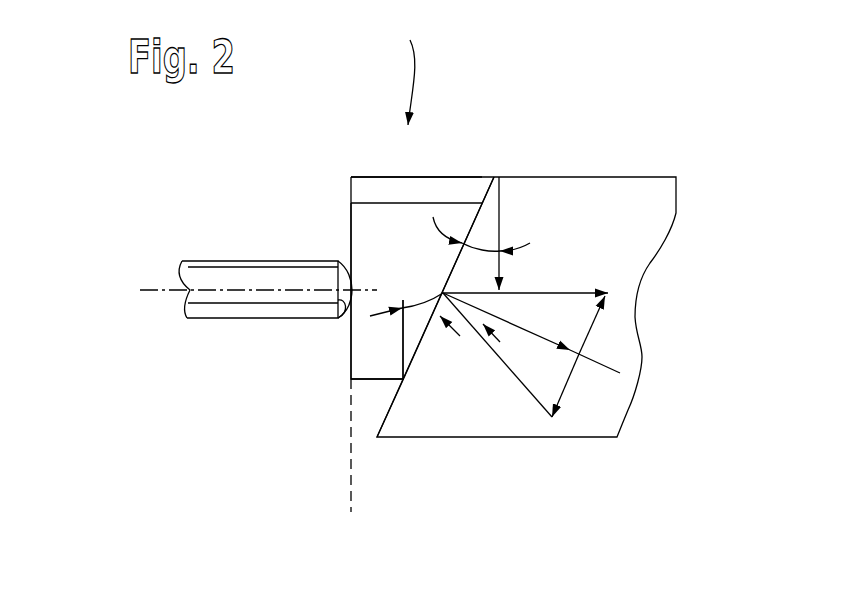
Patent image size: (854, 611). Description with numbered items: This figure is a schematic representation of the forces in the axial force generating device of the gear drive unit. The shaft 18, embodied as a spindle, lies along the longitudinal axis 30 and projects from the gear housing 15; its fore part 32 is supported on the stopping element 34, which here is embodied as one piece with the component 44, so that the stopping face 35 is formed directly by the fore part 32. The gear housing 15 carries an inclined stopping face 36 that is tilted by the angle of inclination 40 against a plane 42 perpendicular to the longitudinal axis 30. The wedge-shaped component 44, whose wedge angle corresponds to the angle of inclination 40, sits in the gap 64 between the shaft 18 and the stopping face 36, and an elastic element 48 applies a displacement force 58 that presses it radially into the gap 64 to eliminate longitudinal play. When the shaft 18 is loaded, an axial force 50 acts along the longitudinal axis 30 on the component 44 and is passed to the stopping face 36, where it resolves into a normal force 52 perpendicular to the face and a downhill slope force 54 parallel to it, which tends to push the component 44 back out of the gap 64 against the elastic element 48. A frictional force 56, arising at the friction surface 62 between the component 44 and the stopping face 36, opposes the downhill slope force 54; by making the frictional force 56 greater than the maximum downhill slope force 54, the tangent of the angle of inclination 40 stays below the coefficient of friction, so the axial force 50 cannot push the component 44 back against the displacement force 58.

The gear housing 15 is at (618, 194).
The shaft 18 is at (212, 308).
The longitudinal axis 30 is at (157, 288).
The fore part 32 is at (355, 273).
The stopping element 34 is at (365, 358).
The stopping face 35 is at (350, 323).
The inclined stopping face 36 is at (412, 358).
The angle of inclination 40 is at (490, 222).
The plane 42 is at (351, 467).
The component 44 is at (363, 222).
The elastic element 48 is at (373, 190).
The axial force 50 is at (562, 292).
The normal force 52 is at (552, 341).
The downhill slope force 54 is at (598, 322).
The frictional force 56 is at (563, 389).
The displacement force 58 is at (410, 67).
The friction surface 62 is at (480, 222).
The gap 64 is at (372, 405).